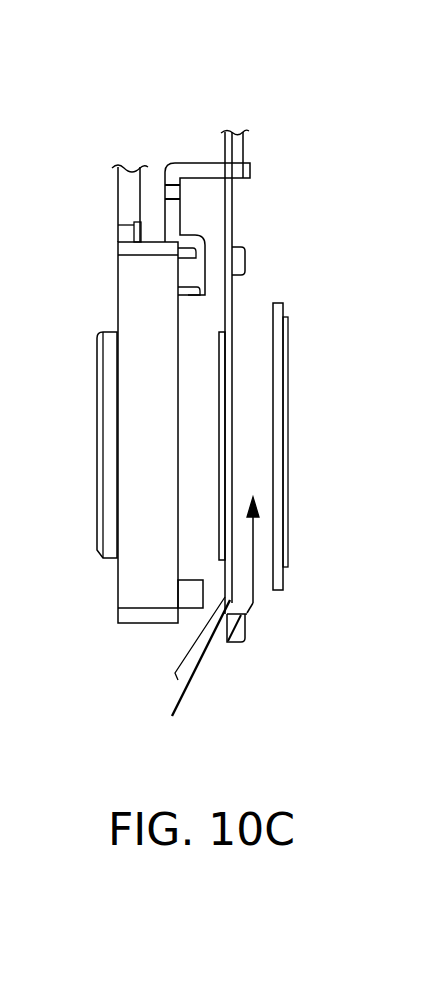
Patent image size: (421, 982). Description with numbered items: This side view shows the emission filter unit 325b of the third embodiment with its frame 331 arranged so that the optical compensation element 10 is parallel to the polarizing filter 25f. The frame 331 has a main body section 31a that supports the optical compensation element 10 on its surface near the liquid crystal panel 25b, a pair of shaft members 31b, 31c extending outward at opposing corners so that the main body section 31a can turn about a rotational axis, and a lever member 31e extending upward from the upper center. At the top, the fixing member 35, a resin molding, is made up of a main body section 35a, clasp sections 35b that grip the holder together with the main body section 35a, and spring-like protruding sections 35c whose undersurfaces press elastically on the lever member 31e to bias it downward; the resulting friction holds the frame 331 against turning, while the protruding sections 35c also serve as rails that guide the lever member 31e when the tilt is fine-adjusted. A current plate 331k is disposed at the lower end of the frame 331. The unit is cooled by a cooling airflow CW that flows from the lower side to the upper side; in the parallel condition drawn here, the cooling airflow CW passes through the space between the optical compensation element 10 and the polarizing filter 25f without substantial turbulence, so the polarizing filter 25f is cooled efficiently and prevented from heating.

The fixing member 35 is at (167, 160).
The main body section 35a is at (172, 220).
The clasp section 35b is at (200, 297).
The protruding section 35c is at (205, 170).
The lever member 31e is at (242, 148).
The main body section 31a is at (232, 438).
The shaft member 31b is at (240, 247).
The shaft member 31c is at (240, 643).
The frame 331 is at (248, 288).
The current plate 331k is at (180, 674).
The optical compensation element 10 is at (225, 392).
The polarizing filter 25f is at (283, 315).
The liquid crystal panel 25b is at (98, 558).
The emission filter unit 325b is at (185, 628).
The cooling airflow CW is at (197, 692).